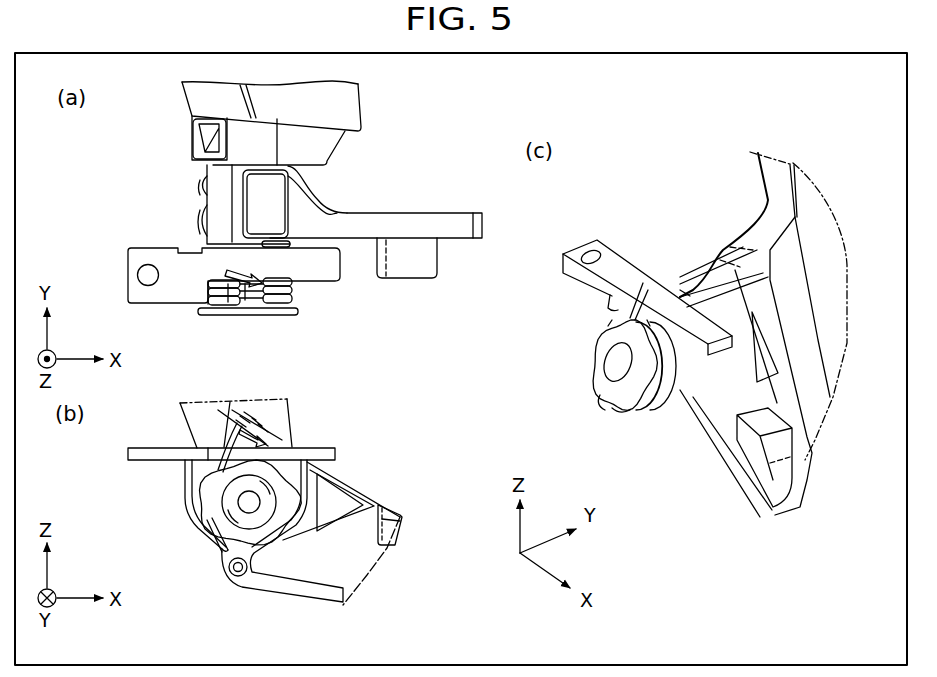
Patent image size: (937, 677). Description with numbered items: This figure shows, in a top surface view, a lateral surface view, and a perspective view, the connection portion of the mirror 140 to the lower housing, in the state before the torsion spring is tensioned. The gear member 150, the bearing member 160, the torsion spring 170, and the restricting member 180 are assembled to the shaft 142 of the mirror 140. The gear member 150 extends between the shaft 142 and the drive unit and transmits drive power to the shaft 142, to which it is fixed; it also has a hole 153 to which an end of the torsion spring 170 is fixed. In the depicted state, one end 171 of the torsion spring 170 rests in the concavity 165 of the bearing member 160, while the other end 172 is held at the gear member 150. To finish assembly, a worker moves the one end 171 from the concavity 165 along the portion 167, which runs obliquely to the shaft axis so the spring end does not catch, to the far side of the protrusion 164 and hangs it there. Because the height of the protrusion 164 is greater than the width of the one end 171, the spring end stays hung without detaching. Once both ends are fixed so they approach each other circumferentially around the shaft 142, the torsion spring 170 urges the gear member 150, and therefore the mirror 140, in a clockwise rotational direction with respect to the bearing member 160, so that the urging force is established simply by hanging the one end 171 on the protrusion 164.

The mirror 140 is at (357, 100).
The shaft 142 is at (200, 200).
The gear member 150 is at (425, 217).
The hole 153 is at (239, 577).
The bearing member 160 is at (335, 279).
The protrusion 164 is at (265, 283).
The concavity 165 is at (208, 288).
The portion 167 is at (245, 289).
The torsion spring 170 is at (300, 295).
The one end 171 is at (228, 287).
The other end 172 is at (222, 555).
The restricting member 180 is at (200, 311).